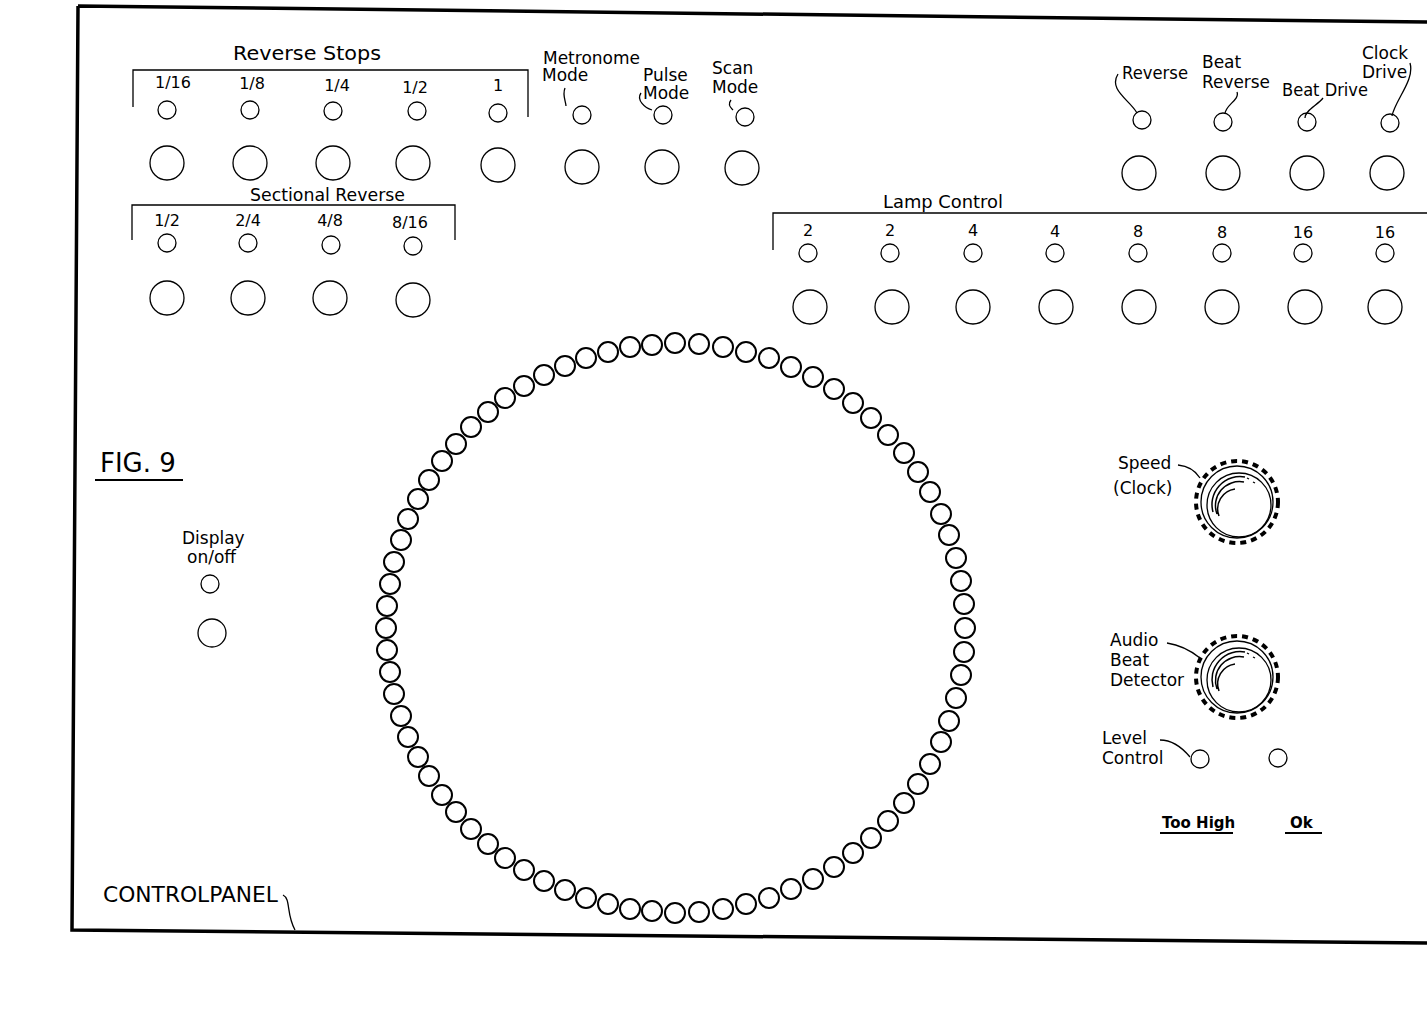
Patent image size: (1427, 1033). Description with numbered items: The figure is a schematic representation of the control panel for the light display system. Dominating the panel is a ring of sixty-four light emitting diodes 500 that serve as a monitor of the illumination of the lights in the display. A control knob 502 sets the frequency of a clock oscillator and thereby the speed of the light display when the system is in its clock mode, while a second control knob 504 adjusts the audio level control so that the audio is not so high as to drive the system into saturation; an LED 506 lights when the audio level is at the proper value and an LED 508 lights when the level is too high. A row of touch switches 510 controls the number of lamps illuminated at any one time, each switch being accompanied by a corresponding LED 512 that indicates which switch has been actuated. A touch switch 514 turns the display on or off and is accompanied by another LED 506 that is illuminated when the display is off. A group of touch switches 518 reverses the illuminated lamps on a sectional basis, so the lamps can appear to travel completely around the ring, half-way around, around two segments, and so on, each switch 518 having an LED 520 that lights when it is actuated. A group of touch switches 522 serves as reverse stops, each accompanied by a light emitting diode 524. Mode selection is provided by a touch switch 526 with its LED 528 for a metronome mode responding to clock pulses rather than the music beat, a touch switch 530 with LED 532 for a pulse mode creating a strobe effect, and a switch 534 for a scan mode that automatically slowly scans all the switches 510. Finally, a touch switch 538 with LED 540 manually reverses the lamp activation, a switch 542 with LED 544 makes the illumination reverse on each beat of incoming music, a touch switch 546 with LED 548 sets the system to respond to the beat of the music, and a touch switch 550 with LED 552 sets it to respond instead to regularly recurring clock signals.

The light emitting diodes 500 is at (457, 445).
The control knob 502 is at (1260, 465).
The control knob 504 is at (1260, 648).
The LED 506 is at (219, 584).
The LED 508 is at (1200, 766).
The touch switches 510 is at (795, 299).
The LED 512 is at (803, 258).
The touch switch 514 is at (198, 633).
The touch switches 518 is at (408, 303).
The LED 520 is at (417, 249).
The touch switches 522 is at (243, 165).
The light emitting diode 524 is at (160, 113).
The touch switch 526 is at (574, 172).
The LED 528 is at (584, 120).
The touch switch 530 is at (654, 172).
The LED 532 is at (665, 120).
The switch 534 is at (746, 122).
The touch switch 538 is at (1130, 178).
The LED 540 is at (1134, 122).
The switch 542 is at (1214, 178).
The LED 544 is at (1215, 124).
The touch switch 546 is at (1298, 178).
The LED 548 is at (1299, 124).
The touch switch 550 is at (1378, 178).
The LED 552 is at (1382, 125).